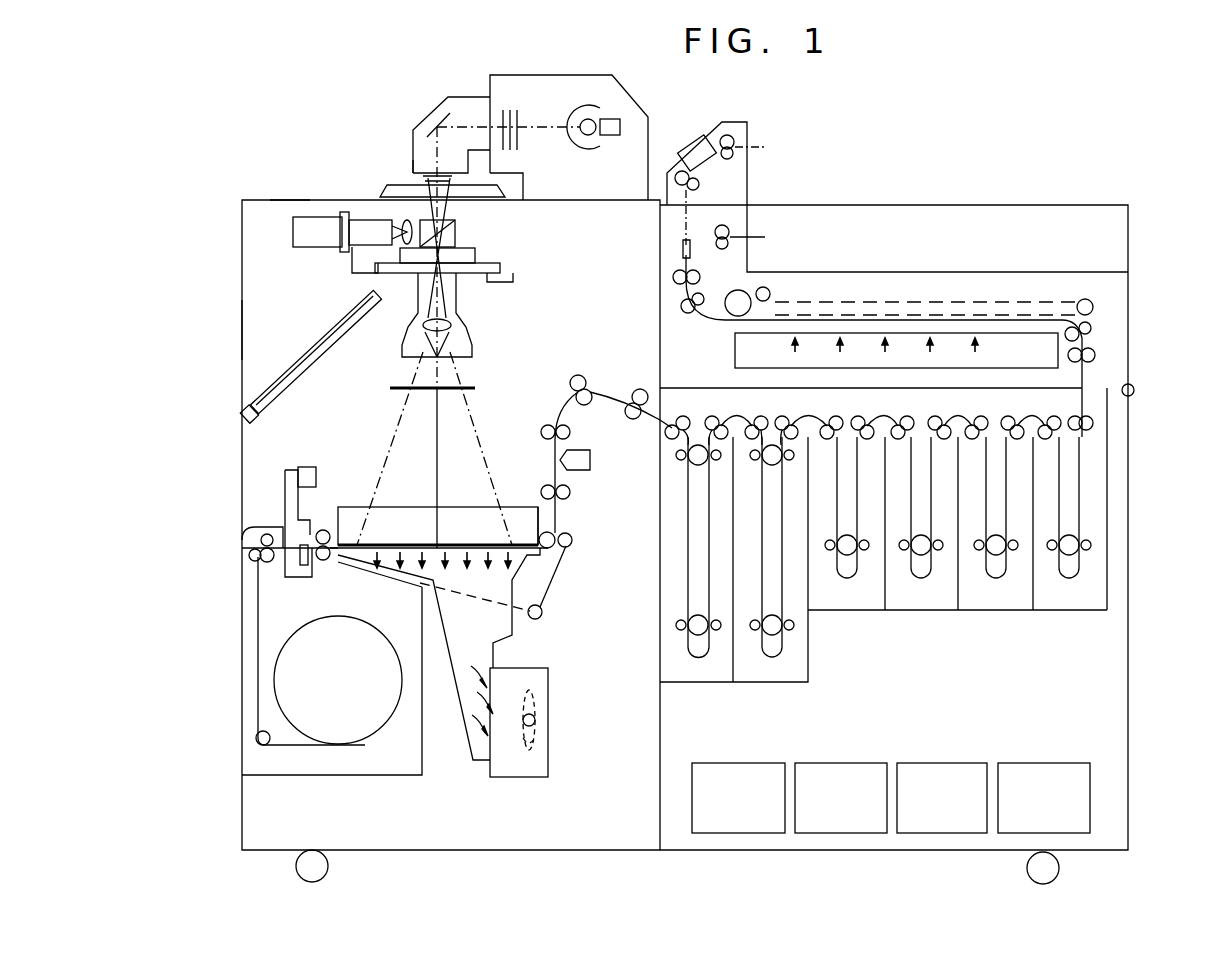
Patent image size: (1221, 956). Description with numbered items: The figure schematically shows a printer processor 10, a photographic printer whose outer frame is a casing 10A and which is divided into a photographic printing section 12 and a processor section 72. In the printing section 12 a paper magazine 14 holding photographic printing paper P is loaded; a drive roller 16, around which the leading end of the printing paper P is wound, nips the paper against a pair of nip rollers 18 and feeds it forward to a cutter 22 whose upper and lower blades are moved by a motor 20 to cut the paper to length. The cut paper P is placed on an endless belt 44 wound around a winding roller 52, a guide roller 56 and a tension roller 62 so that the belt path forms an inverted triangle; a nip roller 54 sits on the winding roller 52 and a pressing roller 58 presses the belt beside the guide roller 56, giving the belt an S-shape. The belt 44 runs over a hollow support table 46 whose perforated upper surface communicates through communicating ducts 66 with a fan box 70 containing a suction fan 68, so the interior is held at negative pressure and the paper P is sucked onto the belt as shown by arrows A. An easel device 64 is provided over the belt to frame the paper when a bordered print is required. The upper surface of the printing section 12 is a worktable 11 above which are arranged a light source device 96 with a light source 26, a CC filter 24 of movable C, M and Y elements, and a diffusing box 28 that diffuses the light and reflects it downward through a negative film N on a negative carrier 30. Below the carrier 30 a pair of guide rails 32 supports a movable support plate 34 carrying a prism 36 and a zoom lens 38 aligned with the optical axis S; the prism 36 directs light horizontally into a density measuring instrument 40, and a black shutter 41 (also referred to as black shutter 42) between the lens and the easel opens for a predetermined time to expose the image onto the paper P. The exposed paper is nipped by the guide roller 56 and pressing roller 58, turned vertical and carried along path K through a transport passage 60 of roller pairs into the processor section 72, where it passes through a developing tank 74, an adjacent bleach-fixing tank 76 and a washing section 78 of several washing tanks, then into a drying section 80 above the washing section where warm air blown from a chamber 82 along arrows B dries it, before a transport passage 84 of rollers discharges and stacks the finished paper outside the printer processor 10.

The printer processor 10 is at (1022, 130).
The casing 10A is at (242, 324).
The worktable 11 is at (290, 200).
The photographic printing section 12 is at (243, 197).
The paper magazine 14 is at (300, 775).
The drive roller 16 is at (258, 572).
The nip rollers 18 is at (267, 533).
The motor 20 is at (312, 467).
The cutter 22 is at (325, 530).
The CC filter 24 is at (516, 150).
The light source 26 is at (600, 108).
The diffusing box 28 is at (448, 97).
The negative carrier 30 is at (387, 190).
The guide rails 32 is at (513, 274).
The support plate 34 is at (458, 277).
The prism 36 is at (455, 236).
The zoom lens 38 is at (462, 330).
The density measuring instrument 40 is at (293, 232).
The black shutter 41 is at (390, 388).
The black shutter 42 is at (342, 330).
The endless belt 44 is at (566, 572).
The support table 46 is at (512, 588).
The winding roller 52 is at (323, 560).
The nip roller 54 is at (338, 540).
The guide roller 56 is at (573, 540).
The pressing roller 58 is at (552, 533).
The transport passage 60 is at (592, 372).
The tension roller 62 is at (543, 617).
The easel device 64 is at (526, 507).
The communicating ducts 66 is at (488, 652).
The suction fan 68 is at (548, 752).
The fan box 70 is at (520, 777).
The processor section 72 is at (1148, 206).
The developing tank 74 is at (702, 682).
The bleach-fixing tank 76 is at (775, 682).
The washing section 78 is at (1108, 618).
The drying section 80 is at (1112, 311).
The chamber 82 is at (1042, 363).
The transport passage 84 is at (712, 274).
The light source device 96 is at (483, 78).
The negative film N is at (420, 170).
The optical axis S is at (437, 418).
The path K is at (637, 408).
The arrows A is at (472, 553).
The arrows B is at (930, 340).
The printing paper P is at (258, 652).